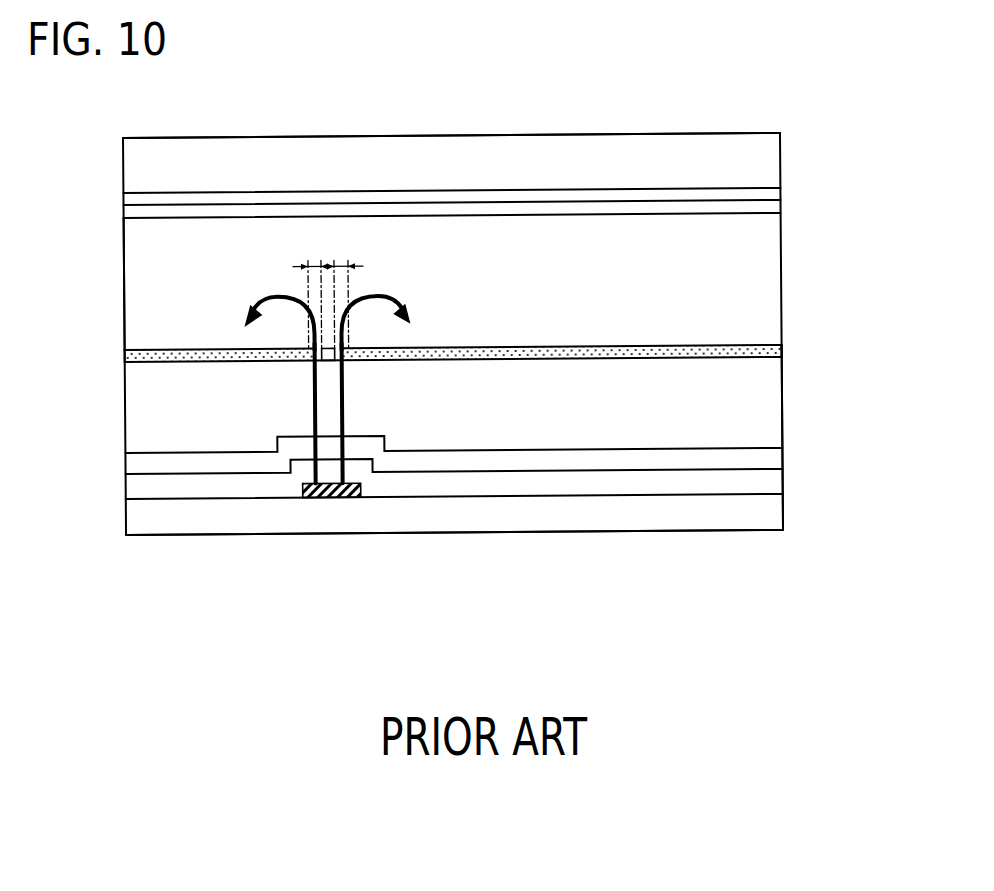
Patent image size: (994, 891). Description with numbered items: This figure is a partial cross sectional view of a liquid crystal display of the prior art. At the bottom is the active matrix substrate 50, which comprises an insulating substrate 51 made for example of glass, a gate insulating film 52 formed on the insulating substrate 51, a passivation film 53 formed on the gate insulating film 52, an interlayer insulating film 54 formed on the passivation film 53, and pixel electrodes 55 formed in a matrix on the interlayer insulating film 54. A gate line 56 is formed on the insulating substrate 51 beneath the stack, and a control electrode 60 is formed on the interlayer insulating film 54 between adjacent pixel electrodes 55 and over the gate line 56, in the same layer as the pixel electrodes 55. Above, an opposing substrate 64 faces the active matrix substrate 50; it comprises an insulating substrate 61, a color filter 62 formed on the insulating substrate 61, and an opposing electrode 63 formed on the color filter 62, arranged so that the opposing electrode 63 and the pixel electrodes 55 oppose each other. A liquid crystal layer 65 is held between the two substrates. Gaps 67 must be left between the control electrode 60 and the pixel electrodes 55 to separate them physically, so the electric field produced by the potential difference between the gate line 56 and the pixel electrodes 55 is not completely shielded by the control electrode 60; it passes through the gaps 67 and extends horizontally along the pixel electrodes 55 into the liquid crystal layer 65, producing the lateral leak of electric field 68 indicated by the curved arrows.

The active matrix substrate 50 is at (864, 335).
The insulating substrate 51 is at (773, 515).
The gate insulating film 52 is at (773, 482).
The passivation film 53 is at (773, 458).
The interlayer insulating film 54 is at (770, 397).
The pixel electrodes 55 is at (772, 350).
The gate lines 56 is at (328, 500).
The control electrode 60 is at (330, 364).
The insulating substrate 61 is at (769, 151).
The color filter 62 is at (772, 192).
The opposing electrode 63 is at (772, 205).
The opposing substrate 64 is at (857, 120).
The liquid crystal layer 65 is at (770, 265).
The gaps 67 is at (313, 262).
The lateral leak of electric field 68 is at (392, 293).